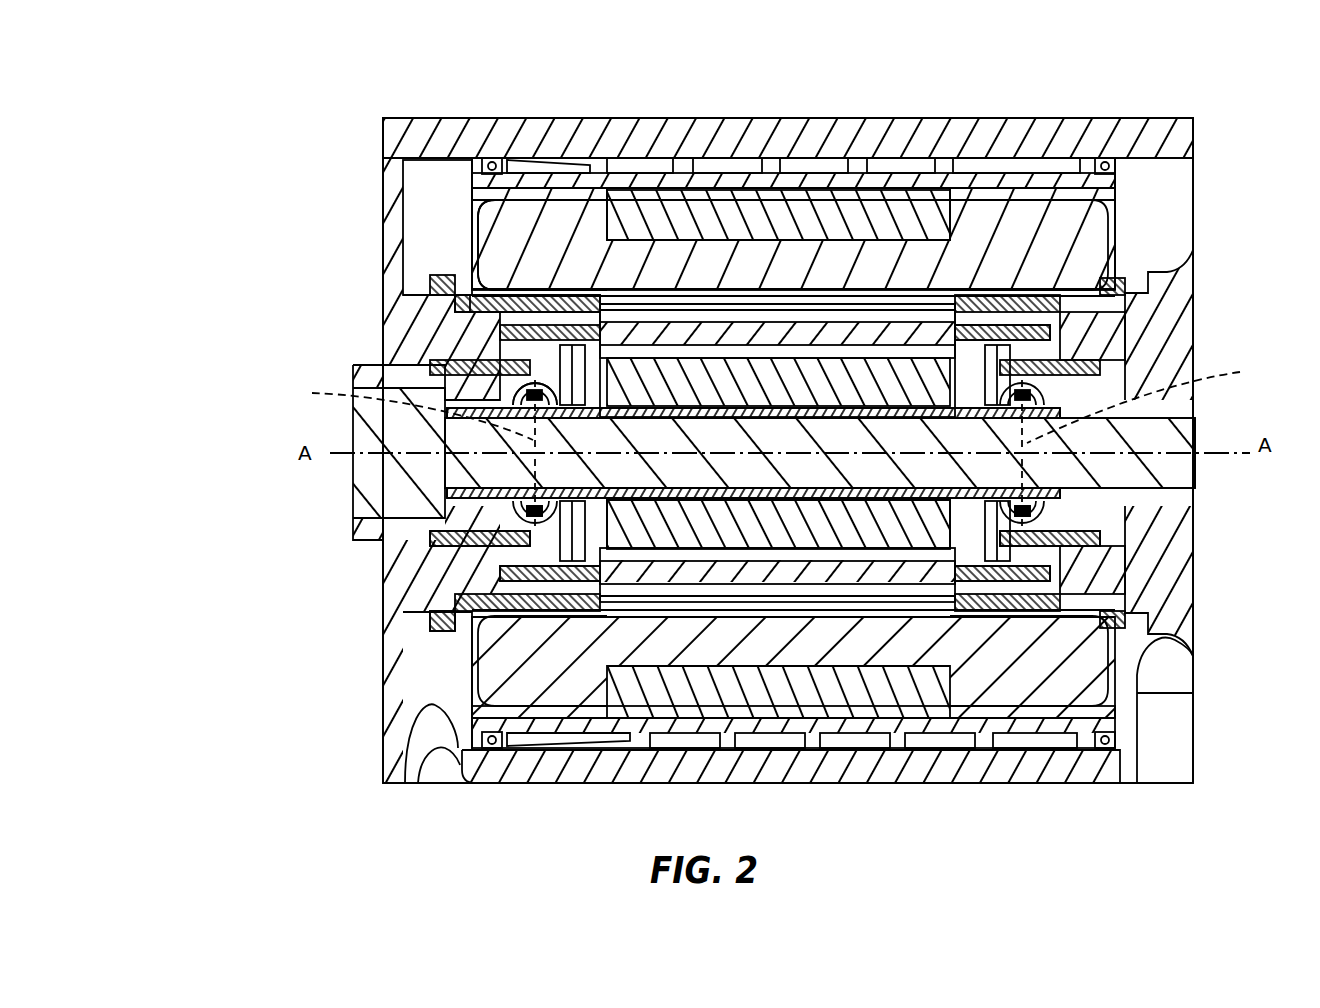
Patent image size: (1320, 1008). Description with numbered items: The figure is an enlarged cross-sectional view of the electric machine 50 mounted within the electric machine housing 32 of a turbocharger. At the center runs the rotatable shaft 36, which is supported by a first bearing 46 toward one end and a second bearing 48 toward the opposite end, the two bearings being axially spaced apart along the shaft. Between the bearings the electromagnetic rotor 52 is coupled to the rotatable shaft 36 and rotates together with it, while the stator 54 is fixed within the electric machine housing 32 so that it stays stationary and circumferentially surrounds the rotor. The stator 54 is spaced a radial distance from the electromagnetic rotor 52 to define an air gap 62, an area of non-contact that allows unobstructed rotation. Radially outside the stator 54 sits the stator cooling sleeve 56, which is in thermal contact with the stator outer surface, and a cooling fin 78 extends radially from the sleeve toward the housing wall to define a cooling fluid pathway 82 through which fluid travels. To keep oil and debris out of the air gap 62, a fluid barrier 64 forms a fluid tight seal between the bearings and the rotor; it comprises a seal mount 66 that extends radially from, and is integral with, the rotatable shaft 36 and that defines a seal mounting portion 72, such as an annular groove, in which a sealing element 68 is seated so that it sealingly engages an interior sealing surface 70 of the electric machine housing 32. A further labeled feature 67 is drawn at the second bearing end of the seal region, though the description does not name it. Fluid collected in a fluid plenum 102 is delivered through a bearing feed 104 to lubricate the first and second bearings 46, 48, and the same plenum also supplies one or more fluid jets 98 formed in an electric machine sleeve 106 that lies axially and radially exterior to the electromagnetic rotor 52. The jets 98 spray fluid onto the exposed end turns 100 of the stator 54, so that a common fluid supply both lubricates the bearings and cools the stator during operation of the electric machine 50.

The electric machine 50 is at (310, 106).
The electric machine housing 32 is at (437, 135).
The stator 54 is at (530, 225).
The stator cooling sleeve 56 is at (568, 188).
The cooling fin 78 is at (690, 163).
The cooling fluid pathway 82 is at (734, 150).
The electromagnetic rotor 52 is at (835, 375).
The end turns 100 is at (473, 237).
The fluid jets 98 is at (603, 293).
The bearing feed 104 is at (475, 355).
The seal mount 66 is at (455, 385).
The fluid barrier 64 is at (774, 401).
The sealing element 68 is at (536, 477).
The first bearing 46 is at (430, 508).
The fluid plenum 102 is at (500, 577).
The electric machine sleeve 106 is at (450, 627).
The interior sealing surface 70 is at (1040, 355).
The rotatable shaft 36 is at (1165, 468).
The second bearing 48 is at (1130, 508).
The bearing 67 is at (1095, 527).
The seal mounting portion 72 is at (1075, 548).
The air gap 62 is at (855, 553).